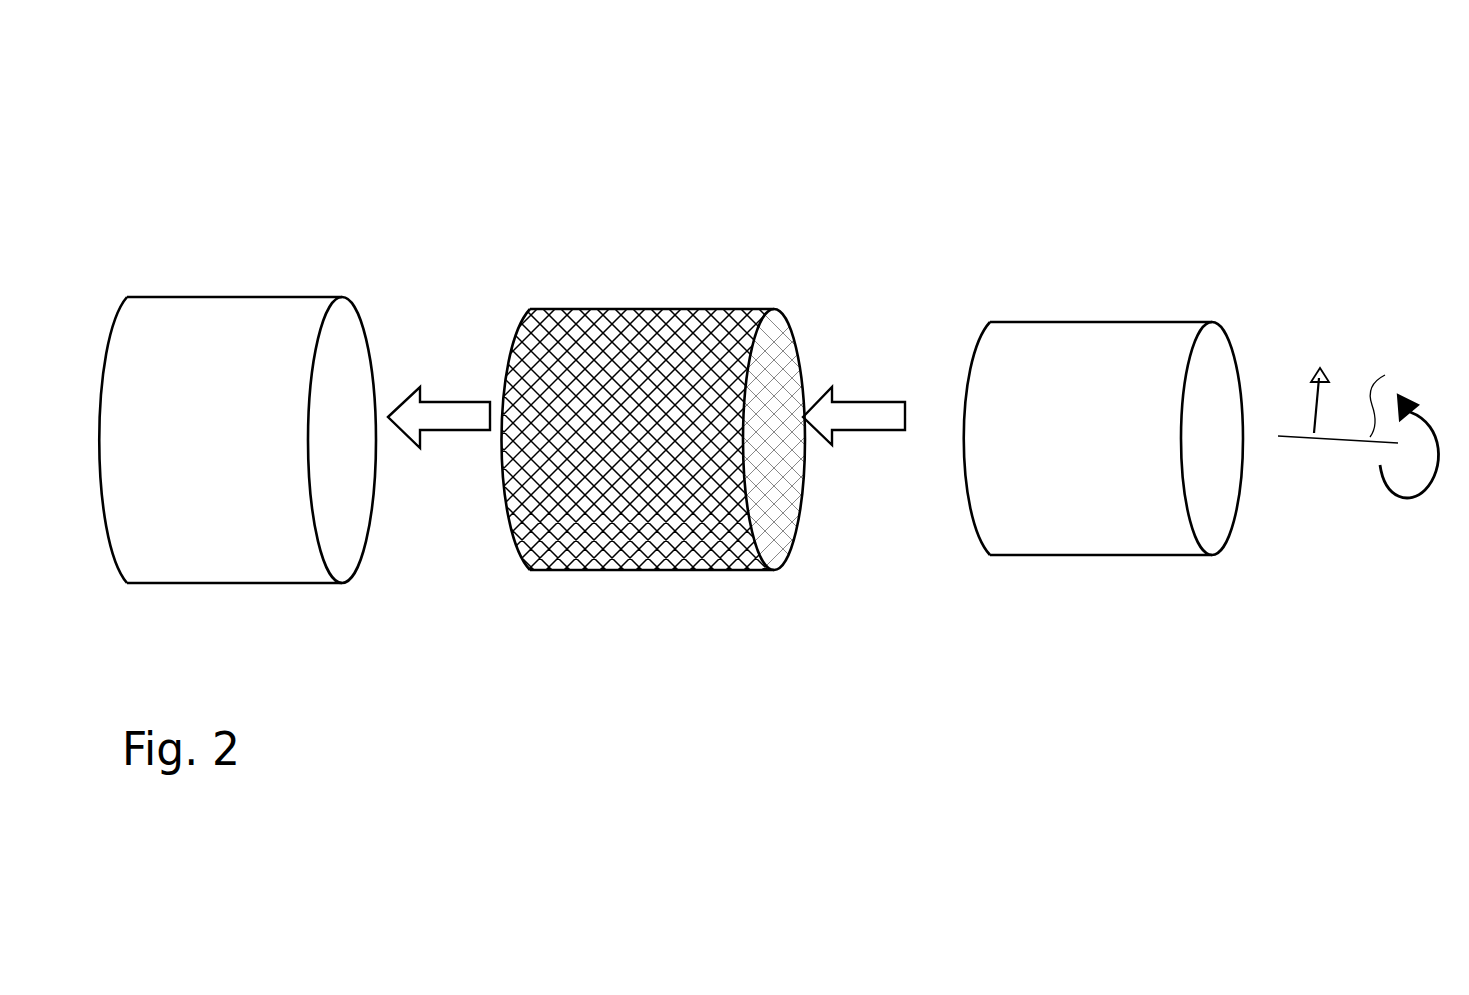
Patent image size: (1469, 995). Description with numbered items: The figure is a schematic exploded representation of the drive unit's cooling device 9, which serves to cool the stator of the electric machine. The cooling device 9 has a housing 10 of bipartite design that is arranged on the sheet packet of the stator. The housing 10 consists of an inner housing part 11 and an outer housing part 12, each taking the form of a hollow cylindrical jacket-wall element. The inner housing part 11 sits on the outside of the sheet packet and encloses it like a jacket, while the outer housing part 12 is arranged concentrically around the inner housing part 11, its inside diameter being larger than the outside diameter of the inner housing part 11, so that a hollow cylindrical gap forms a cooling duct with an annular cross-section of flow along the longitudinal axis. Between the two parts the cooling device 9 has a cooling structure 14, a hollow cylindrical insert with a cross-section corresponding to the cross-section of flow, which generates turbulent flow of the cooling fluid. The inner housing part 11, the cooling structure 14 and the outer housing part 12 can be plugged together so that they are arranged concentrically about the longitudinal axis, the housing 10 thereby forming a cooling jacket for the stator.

The cooling device 9 is at (1028, 146).
The housing 10 is at (278, 263).
The inner housing part 11 is at (1107, 321).
The outer housing part 12 is at (146, 296).
The cooling structure 14 is at (623, 342).